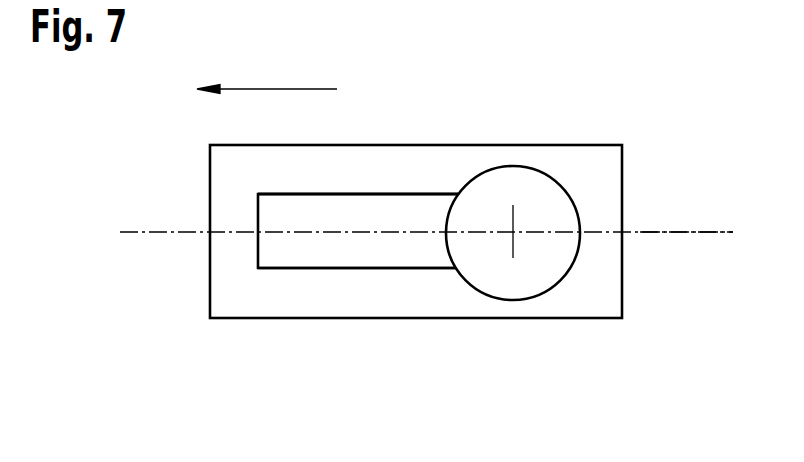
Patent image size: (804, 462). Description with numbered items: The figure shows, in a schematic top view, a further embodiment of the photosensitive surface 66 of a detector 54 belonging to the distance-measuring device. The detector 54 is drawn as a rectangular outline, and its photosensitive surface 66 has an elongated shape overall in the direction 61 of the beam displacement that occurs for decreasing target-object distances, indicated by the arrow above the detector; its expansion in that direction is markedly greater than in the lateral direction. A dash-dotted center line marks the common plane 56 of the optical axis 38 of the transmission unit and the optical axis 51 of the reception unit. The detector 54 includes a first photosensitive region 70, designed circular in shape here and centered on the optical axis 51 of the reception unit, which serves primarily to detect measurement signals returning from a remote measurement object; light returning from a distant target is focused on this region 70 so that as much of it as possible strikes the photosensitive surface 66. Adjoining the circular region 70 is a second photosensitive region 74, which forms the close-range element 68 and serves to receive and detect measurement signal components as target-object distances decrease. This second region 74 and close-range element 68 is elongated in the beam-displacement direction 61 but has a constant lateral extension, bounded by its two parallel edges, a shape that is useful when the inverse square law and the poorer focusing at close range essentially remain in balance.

The optical axis of transmission unit 38 is at (703, 232).
The optical axis of reception unit 51 is at (513, 233).
The detector 54 is at (585, 157).
The common plane of optical axes 56 is at (120, 232).
The direction of beam displacement 61 is at (297, 89).
The photosensitive surface 66 is at (414, 189).
The close-range element 68 is at (247, 205).
The first photosensitive region 70 is at (518, 280).
The second photosensitive region 74 is at (290, 258).